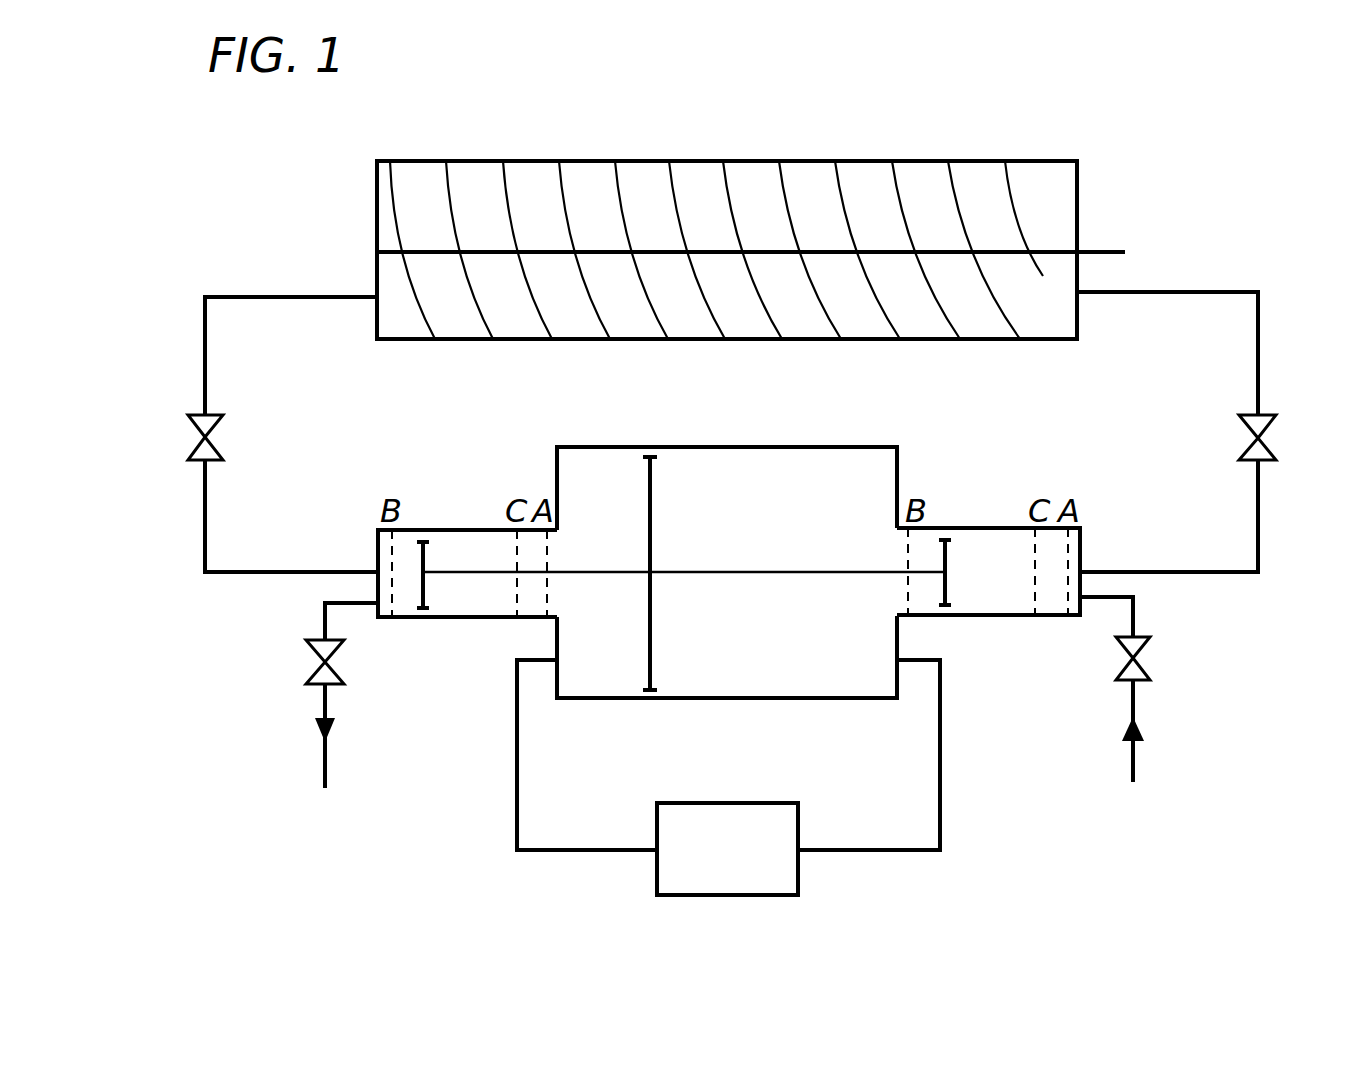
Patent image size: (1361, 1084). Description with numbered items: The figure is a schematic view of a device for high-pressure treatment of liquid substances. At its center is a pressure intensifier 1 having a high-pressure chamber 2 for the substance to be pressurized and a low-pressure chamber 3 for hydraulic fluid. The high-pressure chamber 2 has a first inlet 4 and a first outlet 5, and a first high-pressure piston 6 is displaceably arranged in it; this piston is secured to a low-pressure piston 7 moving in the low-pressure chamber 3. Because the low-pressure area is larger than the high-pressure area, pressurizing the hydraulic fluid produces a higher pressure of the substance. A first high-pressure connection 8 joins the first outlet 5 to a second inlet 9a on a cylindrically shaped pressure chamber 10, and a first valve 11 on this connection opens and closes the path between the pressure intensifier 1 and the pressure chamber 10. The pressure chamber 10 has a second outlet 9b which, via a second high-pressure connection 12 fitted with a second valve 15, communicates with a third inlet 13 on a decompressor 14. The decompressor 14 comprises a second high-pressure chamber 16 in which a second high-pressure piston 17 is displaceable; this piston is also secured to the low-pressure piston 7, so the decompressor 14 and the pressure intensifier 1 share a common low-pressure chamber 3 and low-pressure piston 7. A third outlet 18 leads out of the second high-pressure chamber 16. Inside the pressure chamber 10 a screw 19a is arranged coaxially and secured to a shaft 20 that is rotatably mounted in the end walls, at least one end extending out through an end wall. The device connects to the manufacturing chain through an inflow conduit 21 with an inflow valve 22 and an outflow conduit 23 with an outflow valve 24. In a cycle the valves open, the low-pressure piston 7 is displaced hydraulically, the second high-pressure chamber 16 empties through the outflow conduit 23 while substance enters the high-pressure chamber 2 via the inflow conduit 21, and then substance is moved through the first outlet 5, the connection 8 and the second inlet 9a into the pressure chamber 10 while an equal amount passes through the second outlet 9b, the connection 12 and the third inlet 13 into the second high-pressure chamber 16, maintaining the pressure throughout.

The pressure intensifier 1 is at (992, 514).
The high-pressure chamber 2 is at (1003, 593).
The low-pressure chamber 3 is at (798, 680).
The first inlet 4 is at (1083, 597).
The first outlet 5 is at (1082, 575).
The first high-pressure piston 6 is at (946, 592).
The low-pressure piston 7 is at (650, 665).
The first high-pressure connection 8 is at (1258, 525).
The second inlet 9a is at (1080, 296).
The second outlet 9b is at (375, 296).
The pressure chamber 10 is at (882, 158).
The first valve 11 is at (1262, 438).
The second high-pressure connection 12 is at (203, 343).
The third inlet 13 is at (377, 571).
The decompressor 14 is at (463, 515).
The second valve 15 is at (200, 437).
The second high-pressure chamber 16 is at (408, 597).
The second high-pressure piston 17 is at (427, 597).
The third outlet 18 is at (375, 600).
The screw 19a is at (724, 187).
The shaft 20 is at (1100, 247).
The inflow conduit 21 is at (1137, 758).
The inflow valve 22 is at (1138, 658).
The outflow conduit 23 is at (323, 762).
The outflow valve 24 is at (312, 660).